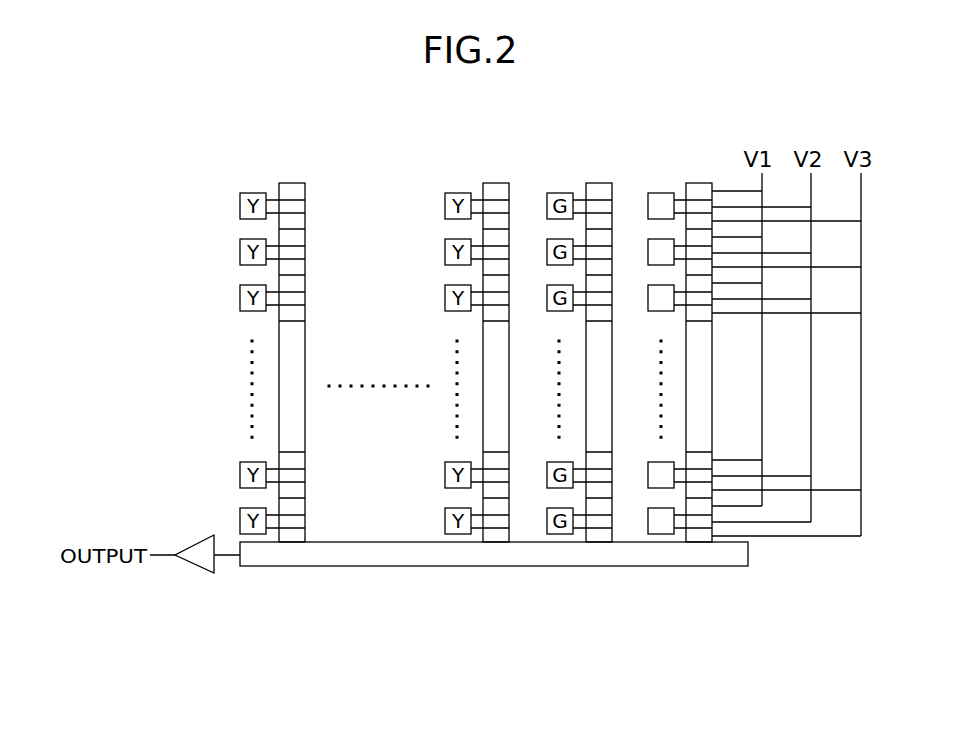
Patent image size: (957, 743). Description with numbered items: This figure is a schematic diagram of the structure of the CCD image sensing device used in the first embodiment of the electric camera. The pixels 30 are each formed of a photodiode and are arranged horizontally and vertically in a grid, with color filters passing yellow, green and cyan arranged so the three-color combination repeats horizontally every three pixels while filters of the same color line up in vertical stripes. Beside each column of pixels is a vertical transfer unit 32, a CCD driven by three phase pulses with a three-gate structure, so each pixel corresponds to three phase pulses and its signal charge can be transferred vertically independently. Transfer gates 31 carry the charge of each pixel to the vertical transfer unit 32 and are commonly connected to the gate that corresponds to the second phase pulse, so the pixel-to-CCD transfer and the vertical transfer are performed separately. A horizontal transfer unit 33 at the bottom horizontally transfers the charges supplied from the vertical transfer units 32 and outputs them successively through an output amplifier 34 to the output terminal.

The pixels 30 is at (663, 192).
The transfer gates 31 is at (681, 199).
The vertical transfer unit 32 is at (697, 182).
The horizontal transfer unit 33 is at (495, 566).
The output amplifier 34 is at (195, 567).